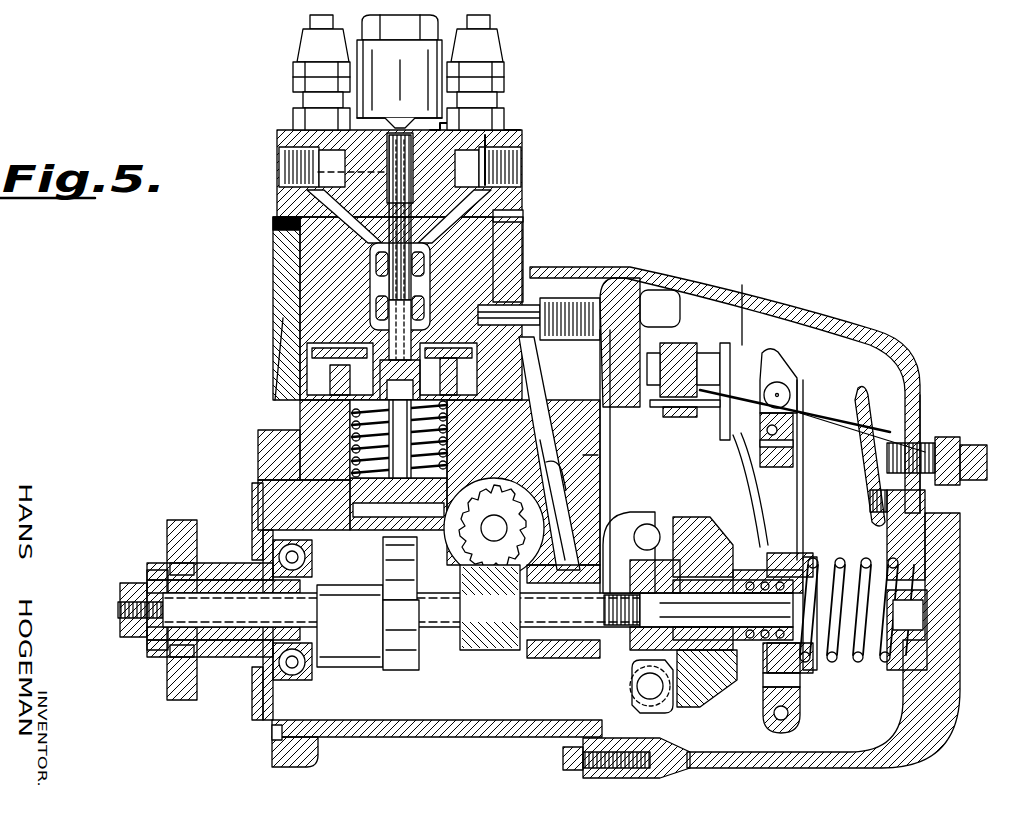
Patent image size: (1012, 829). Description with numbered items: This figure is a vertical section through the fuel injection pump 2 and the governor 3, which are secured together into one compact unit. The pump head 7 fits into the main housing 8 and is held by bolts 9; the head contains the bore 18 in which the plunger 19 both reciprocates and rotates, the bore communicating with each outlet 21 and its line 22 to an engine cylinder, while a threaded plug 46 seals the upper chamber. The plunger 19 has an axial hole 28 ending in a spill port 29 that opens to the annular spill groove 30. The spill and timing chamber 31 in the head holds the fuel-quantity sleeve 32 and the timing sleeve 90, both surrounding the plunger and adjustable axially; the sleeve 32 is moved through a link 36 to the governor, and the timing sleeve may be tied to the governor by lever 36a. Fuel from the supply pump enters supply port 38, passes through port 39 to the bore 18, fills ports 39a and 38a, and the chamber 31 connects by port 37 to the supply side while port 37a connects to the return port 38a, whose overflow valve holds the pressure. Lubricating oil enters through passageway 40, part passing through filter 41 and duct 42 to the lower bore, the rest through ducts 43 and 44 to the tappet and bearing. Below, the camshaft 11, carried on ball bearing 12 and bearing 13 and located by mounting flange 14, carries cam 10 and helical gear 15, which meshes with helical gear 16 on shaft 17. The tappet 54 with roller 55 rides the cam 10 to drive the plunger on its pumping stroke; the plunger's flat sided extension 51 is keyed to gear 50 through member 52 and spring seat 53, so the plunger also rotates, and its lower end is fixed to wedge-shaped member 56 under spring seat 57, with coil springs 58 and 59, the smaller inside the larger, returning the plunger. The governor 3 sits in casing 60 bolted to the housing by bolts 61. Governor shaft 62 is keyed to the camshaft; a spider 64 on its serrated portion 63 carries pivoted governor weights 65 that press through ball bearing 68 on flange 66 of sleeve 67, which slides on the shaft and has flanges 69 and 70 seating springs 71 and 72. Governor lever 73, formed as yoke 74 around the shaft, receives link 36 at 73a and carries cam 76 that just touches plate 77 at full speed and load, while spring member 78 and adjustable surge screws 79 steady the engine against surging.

The fuel injection pump 2 is at (224, 265).
The governor 3 is at (940, 428).
The pump head 7 is at (280, 133).
The main housing 8 is at (282, 322).
The bolts 9 is at (478, 128).
The cam 10 is at (400, 665).
The camshaft 11 is at (360, 645).
The ball bearing 12 is at (252, 500).
The bearing 13 is at (568, 660).
The mounting flange 14 is at (272, 758).
The helical gear 15 is at (486, 650).
The helical gear 16 is at (474, 552).
The shaft 17 is at (496, 521).
The bore 18 is at (487, 136).
The plunger 19 is at (392, 208).
The outlet 21 is at (312, 42).
The conduit or line 22 is at (312, 22).
The axial hole 28 is at (318, 176).
The spill port 29 is at (395, 290).
The annular spill groove 30 is at (395, 302).
The chamber 31 is at (275, 244).
The sleeve 32 is at (500, 312).
The link 36 is at (735, 400).
The lever 36a is at (745, 475).
The port 37 is at (500, 215).
The port 37a is at (275, 222).
The supply port 38 is at (478, 160).
The port 38a is at (322, 170).
The port 39 is at (495, 150).
The port 39a is at (280, 155).
The passageway 40 is at (549, 453).
The filter 41 is at (580, 290).
The duct 42 is at (565, 300).
The duct 43 is at (606, 440).
The duct 44 is at (610, 458).
The threaded plug 46 is at (495, 40).
The gear 50 is at (440, 378).
The flat sided extension 51 is at (330, 355).
The member 52 is at (332, 388).
The spring seat 53 is at (380, 392).
The tappet 54 is at (352, 488).
The roller 55 is at (384, 553).
The wedge-shaped member 56 is at (290, 448).
The spring seat 57 is at (270, 475).
The coil spring 58 is at (302, 430).
The coil spring 59 is at (352, 418).
The casing 60 is at (905, 735).
The bolts 61 is at (563, 759).
The governor shaft 62 is at (704, 530).
The serrated portion 63 is at (636, 570).
The spider 64 is at (628, 535).
The governor weights 65 is at (648, 523).
The flange 66 is at (724, 692).
The sleeve 67 is at (762, 680).
The ball bearing 68 is at (642, 702).
The flange 69 is at (745, 580).
The flange 70 is at (806, 557).
The spring 71 is at (844, 568).
The spring 72 is at (892, 660).
The governor lever 73 is at (792, 395).
The connection point 73a is at (795, 431).
The yoke 74 is at (805, 478).
The cam 76 is at (770, 355).
The plate 77 is at (742, 340).
The spring member 78 is at (868, 448).
The adjustable surge screws 79 is at (970, 445).
The timing sleeve 90 is at (523, 240).